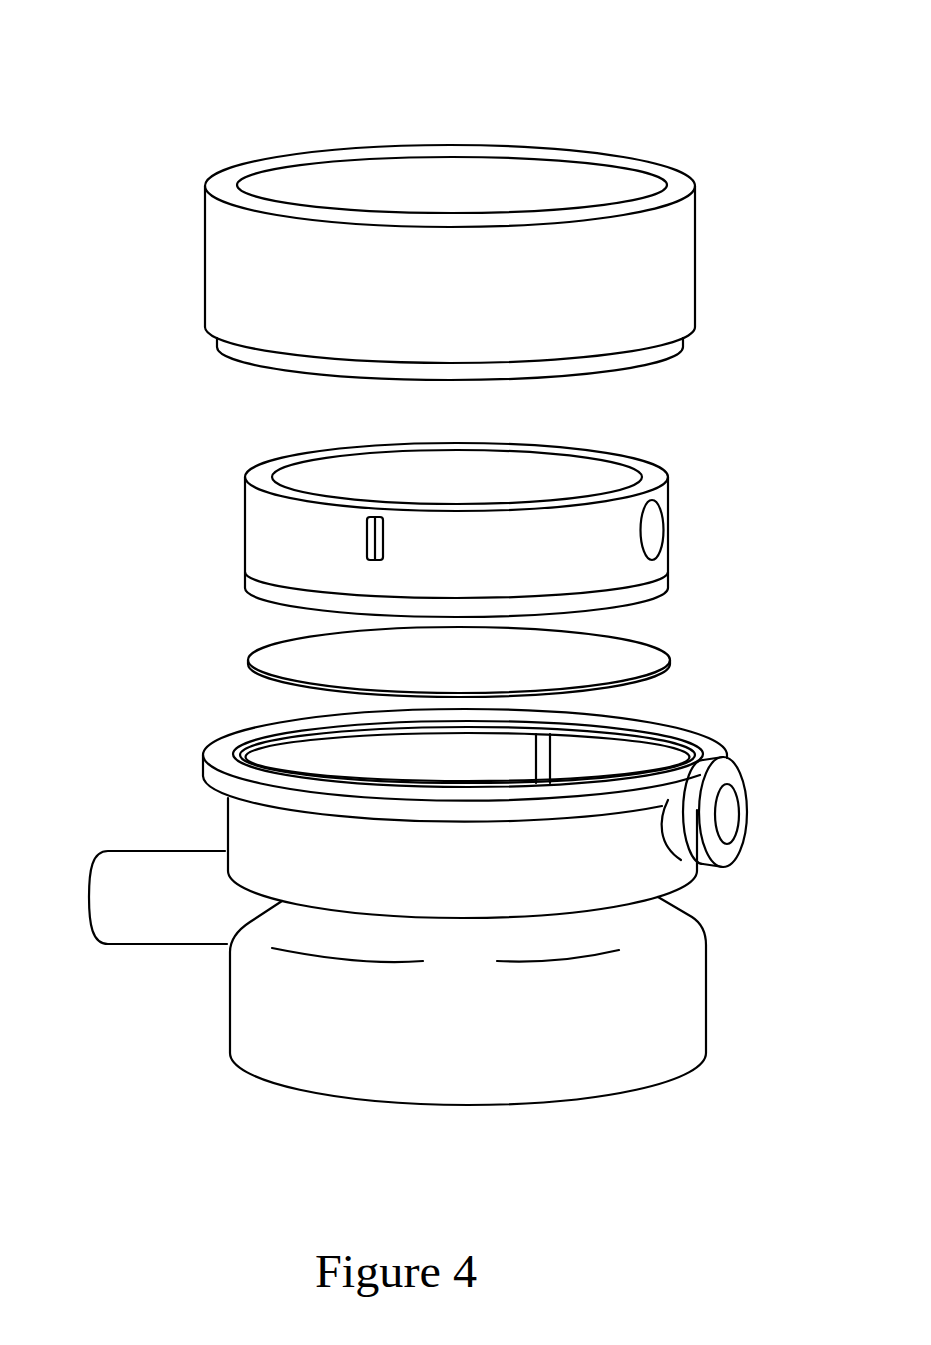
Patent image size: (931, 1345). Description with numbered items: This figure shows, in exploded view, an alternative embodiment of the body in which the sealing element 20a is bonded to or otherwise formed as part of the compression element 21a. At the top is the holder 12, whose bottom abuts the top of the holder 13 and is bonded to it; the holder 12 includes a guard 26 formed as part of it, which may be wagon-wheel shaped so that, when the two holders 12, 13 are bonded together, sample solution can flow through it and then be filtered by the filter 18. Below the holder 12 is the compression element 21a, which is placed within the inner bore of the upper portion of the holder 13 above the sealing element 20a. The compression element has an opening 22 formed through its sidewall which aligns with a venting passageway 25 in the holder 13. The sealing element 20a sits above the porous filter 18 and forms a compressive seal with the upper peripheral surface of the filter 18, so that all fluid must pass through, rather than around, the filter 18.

The holder 12 is at (662, 275).
The opening 22 is at (330, 155).
The guard 26 is at (462, 190).
The compression element 21a is at (243, 511).
The sealing element 20a is at (258, 591).
The filter 18 is at (640, 660).
The venting passageway 25 is at (727, 818).
The holder 13 is at (308, 1032).